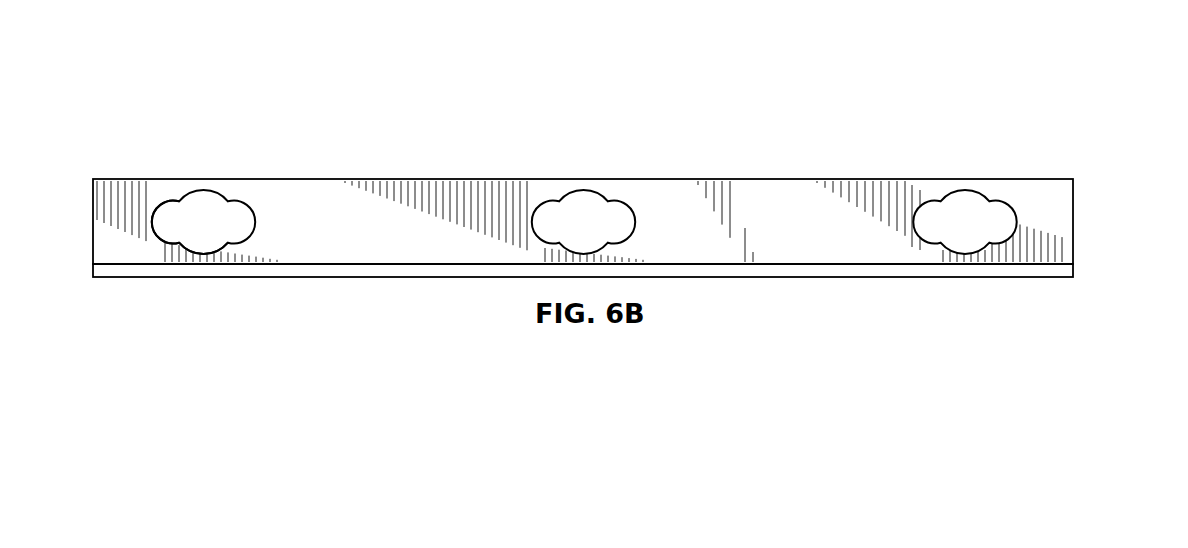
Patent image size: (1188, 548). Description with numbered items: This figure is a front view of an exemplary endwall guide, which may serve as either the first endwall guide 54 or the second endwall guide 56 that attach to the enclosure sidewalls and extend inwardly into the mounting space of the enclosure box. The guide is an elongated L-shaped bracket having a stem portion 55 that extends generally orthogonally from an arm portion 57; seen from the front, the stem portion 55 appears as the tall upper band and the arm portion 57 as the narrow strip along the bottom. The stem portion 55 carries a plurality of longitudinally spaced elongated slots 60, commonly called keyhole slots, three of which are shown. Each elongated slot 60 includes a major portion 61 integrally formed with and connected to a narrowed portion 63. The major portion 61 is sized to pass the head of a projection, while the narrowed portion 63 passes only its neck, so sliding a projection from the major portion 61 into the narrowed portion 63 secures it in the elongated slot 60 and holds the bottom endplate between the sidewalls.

The first endwall guide 54 is at (633, 180).
The second endwall guide 56 is at (633, 180).
The stem portion 55 is at (1080, 209).
The arm portion 57 is at (1080, 275).
The elongated slot 60 is at (200, 193).
The major portion 61 is at (203, 243).
The narrowed portion 63 is at (173, 233).